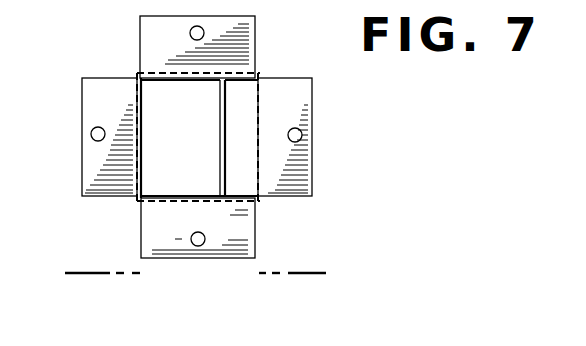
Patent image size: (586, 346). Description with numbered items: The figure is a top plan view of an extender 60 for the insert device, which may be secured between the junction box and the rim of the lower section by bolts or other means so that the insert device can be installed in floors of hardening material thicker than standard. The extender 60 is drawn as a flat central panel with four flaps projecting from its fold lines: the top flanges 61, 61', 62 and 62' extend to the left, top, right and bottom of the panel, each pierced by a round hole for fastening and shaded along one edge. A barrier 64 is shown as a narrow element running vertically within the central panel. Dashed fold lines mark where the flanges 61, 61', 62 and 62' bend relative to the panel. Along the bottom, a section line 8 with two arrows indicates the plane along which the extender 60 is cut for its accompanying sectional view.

The extender 60 is at (143, 171).
The top flange 61 is at (80, 137).
The top flange 61' is at (225, 47).
The top flange 62 is at (313, 137).
The top flange 62' is at (225, 228).
The barrier 64 is at (221, 135).
The section line 8 is at (88, 273).